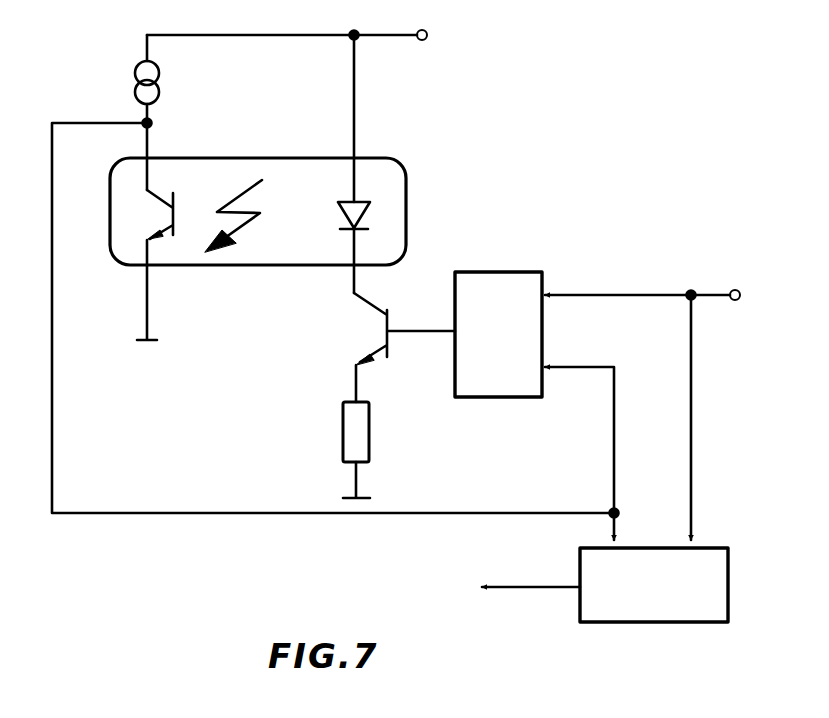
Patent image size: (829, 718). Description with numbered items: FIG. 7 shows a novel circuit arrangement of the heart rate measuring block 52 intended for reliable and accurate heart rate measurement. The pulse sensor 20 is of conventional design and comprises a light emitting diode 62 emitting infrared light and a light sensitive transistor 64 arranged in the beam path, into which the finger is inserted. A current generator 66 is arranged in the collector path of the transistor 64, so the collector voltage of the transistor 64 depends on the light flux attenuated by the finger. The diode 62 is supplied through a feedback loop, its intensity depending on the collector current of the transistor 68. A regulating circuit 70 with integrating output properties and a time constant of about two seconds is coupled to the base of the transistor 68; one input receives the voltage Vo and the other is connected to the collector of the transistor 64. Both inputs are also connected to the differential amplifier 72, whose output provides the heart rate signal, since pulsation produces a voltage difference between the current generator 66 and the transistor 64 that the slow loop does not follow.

The heart rate measuring block 52 is at (68, 640).
The pulse sensor 20 is at (367, 107).
The light emitting diode 62 is at (372, 197).
The light sensitive transistor 64 is at (152, 218).
The current generator 66 is at (132, 90).
The transistor 68 is at (370, 327).
The regulating circuit 70 is at (500, 270).
The differential amplifier 72 is at (728, 580).